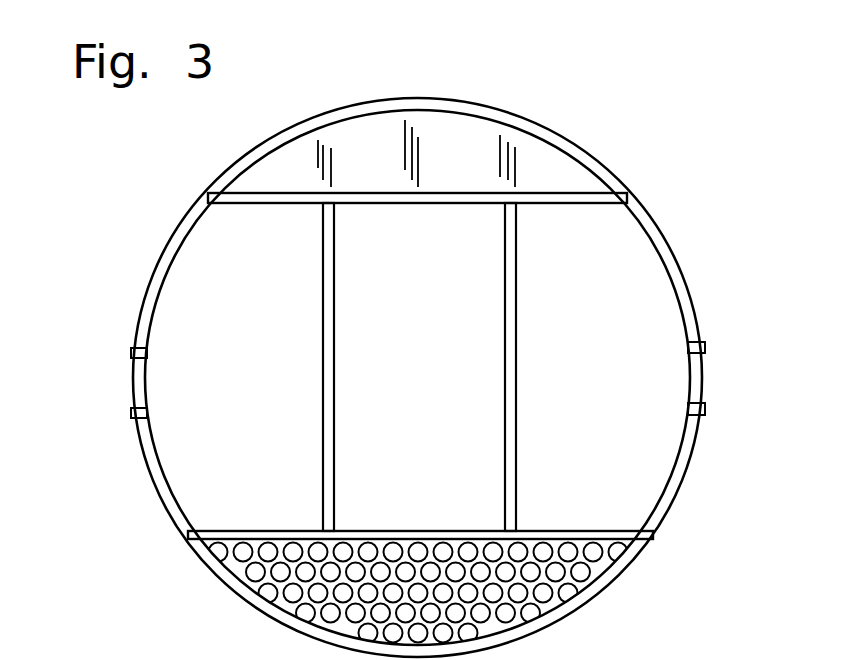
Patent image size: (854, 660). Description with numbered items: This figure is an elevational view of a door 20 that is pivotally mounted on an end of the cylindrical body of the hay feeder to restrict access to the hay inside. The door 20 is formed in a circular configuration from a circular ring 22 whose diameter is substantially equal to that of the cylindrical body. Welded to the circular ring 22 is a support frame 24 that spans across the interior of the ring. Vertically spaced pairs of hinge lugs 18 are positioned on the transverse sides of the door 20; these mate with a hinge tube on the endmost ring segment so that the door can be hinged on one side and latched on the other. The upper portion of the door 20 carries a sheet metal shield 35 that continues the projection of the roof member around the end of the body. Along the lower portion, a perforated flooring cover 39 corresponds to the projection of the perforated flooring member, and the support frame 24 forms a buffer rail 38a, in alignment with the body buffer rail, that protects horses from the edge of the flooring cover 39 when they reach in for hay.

The door 20 is at (613, 80).
The circular ring 22 is at (667, 238).
The hinge lugs 18 is at (147, 352).
The shield 35 is at (455, 127).
The support frame 24 is at (334, 332).
The buffer rail 38a is at (376, 531).
The perforated flooring cover 39 is at (280, 550).